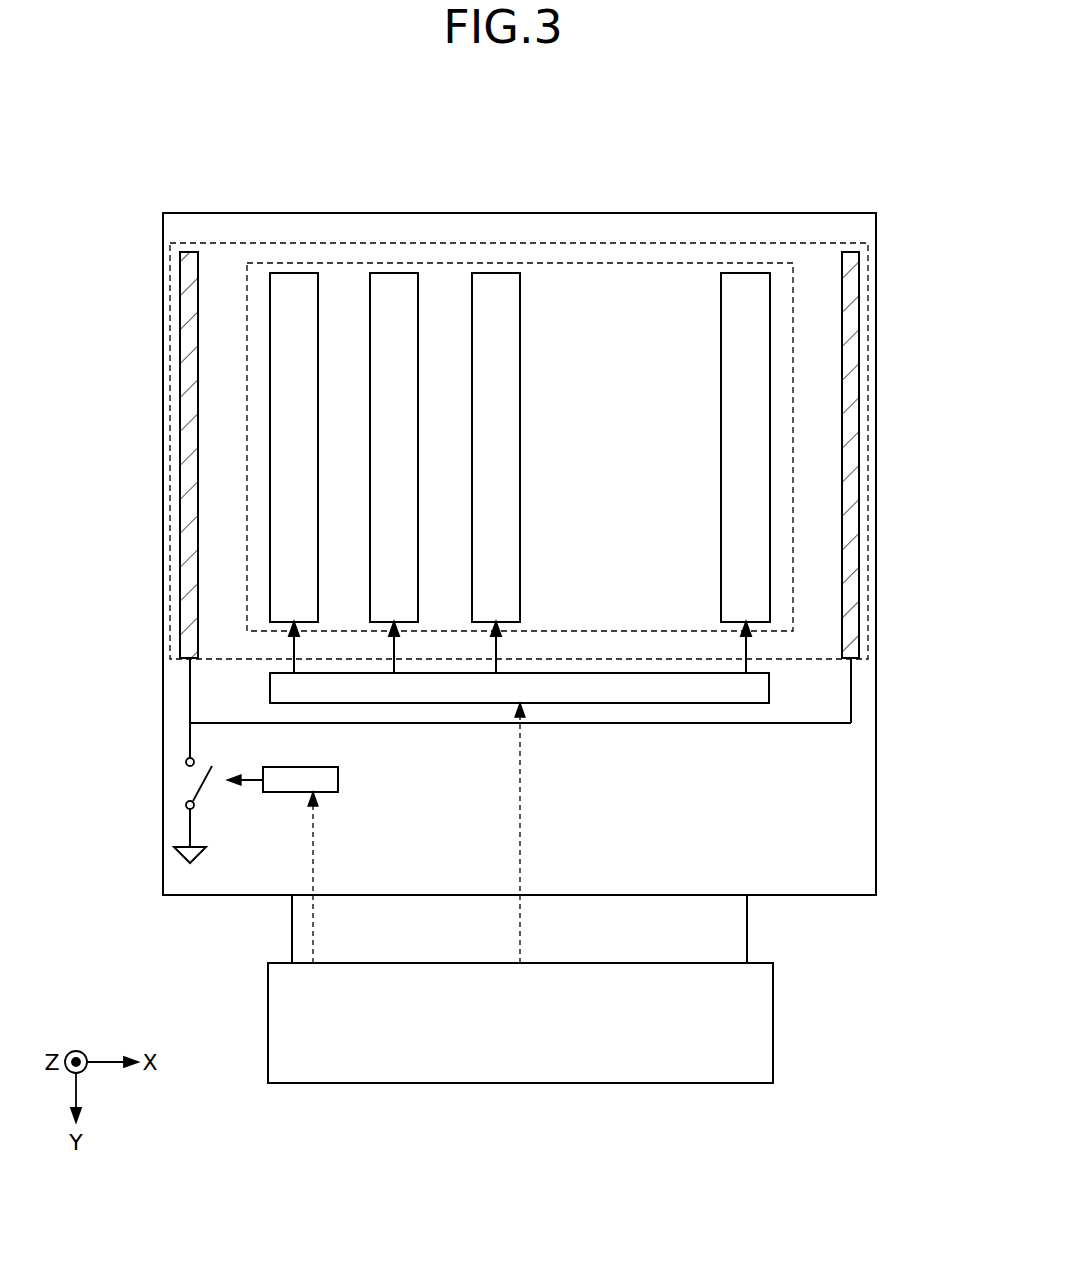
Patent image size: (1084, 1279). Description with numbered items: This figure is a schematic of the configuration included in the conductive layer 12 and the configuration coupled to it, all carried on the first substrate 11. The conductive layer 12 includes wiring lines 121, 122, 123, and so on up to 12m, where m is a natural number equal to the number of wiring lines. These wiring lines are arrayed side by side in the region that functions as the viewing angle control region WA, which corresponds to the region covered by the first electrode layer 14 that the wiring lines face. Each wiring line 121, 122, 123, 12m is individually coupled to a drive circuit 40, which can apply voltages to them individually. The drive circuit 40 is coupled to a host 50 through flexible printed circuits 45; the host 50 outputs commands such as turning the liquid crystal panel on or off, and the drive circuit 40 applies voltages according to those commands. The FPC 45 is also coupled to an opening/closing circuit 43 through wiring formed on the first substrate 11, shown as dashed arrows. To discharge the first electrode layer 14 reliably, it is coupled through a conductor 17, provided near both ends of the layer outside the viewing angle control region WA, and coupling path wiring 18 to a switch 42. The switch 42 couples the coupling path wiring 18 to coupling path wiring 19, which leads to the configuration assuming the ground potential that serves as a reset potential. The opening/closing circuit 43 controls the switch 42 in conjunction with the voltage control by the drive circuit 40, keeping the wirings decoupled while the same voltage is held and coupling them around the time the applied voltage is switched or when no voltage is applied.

The first substrate 11 is at (877, 216).
The conductive layer 12 is at (269, 152).
The wiring line 121 is at (294, 287).
The wiring line 122 is at (394, 287).
The wiring line 123 is at (495, 287).
The wiring line 12m is at (748, 287).
The viewing angle control region WA is at (788, 262).
The first electrode layer 14 is at (868, 310).
The conductor 17 is at (182, 434).
The coupling path wiring 18 is at (190, 697).
The coupling path wiring 19 is at (190, 826).
The drive circuit 40 is at (750, 690).
The switch 42 is at (166, 779).
The opening/closing circuit 43 is at (338, 780).
The flexible printed circuits (FPC) 45 is at (730, 925).
The host 50 is at (755, 1018).